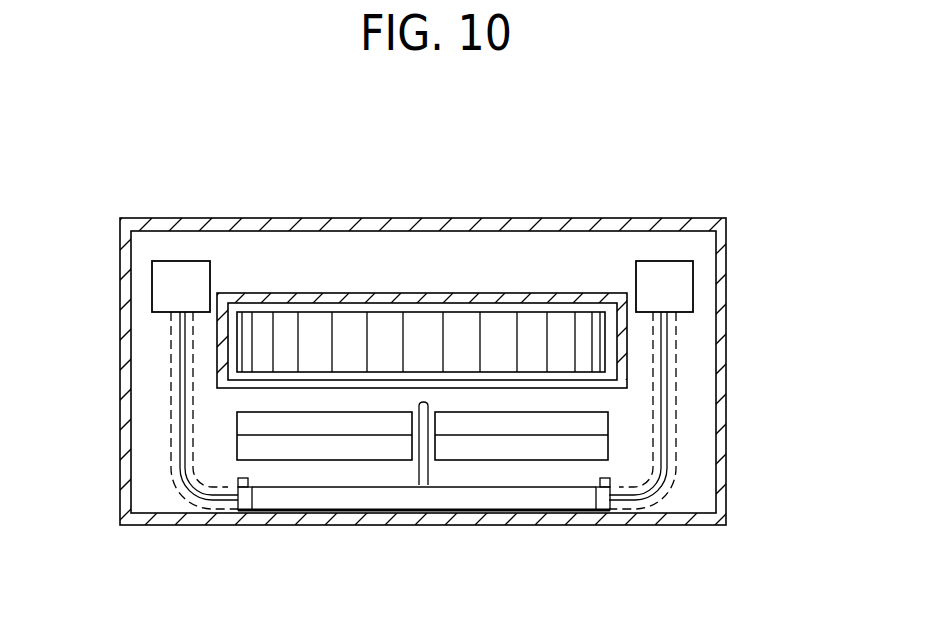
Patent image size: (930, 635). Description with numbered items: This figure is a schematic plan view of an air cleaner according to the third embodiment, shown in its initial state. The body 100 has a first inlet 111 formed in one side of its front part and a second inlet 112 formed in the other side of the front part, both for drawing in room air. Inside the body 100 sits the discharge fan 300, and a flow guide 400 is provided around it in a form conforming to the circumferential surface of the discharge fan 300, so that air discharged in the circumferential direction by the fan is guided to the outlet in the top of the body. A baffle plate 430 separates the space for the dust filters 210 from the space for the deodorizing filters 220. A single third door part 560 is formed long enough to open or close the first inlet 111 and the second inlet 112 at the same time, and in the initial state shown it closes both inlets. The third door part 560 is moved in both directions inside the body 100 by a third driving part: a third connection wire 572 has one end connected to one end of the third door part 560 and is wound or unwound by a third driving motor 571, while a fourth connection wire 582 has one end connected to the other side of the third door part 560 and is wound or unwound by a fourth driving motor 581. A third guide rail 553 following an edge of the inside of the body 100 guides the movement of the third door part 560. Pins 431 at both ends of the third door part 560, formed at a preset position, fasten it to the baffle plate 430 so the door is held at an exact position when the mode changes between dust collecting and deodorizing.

The body 100 is at (617, 222).
The first inlet 111 is at (322, 518).
The second inlet 112 is at (462, 516).
The dust filters 210 is at (243, 447).
The deodorizing filters 220 is at (603, 447).
The discharge fan 300 is at (532, 325).
The flow guide 400 is at (421, 290).
The baffle plate 430 is at (423, 462).
The pins 431 is at (581, 488).
The third guide rail 553 is at (678, 423).
The third door part 560 is at (532, 496).
The third driving motor 571 is at (175, 287).
The third connection wire 572 is at (178, 369).
The fourth driving motor 581 is at (670, 287).
The fourth connection wire 582 is at (668, 370).